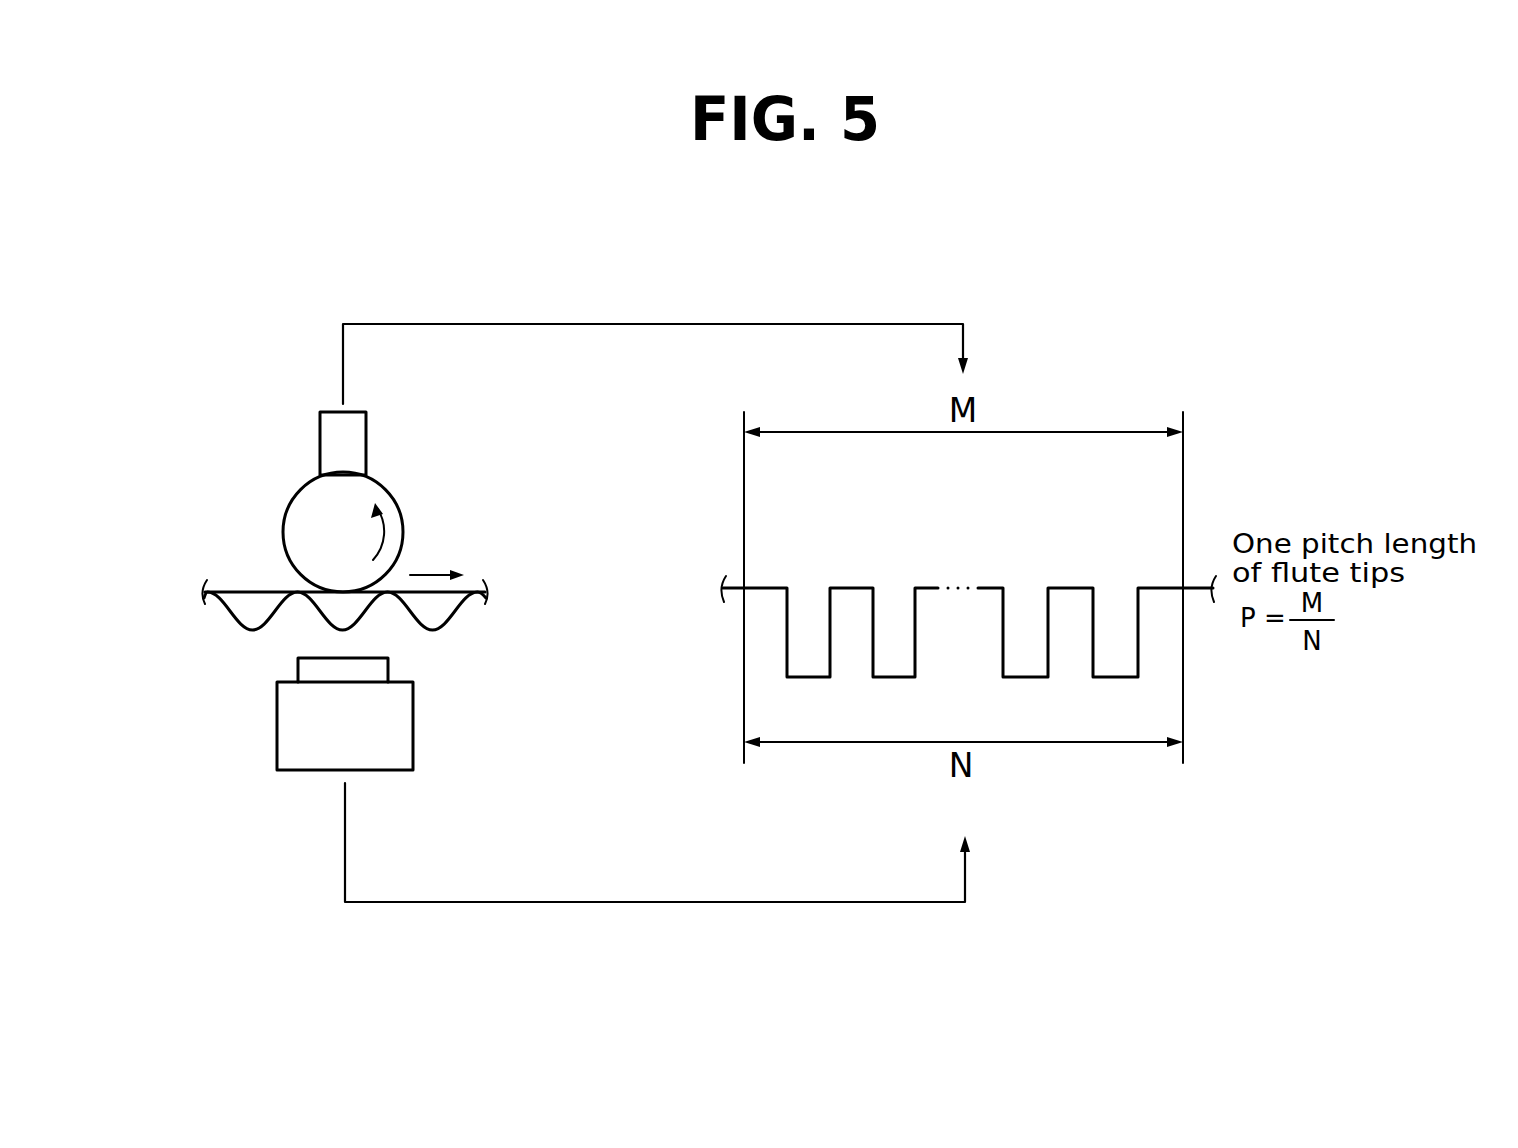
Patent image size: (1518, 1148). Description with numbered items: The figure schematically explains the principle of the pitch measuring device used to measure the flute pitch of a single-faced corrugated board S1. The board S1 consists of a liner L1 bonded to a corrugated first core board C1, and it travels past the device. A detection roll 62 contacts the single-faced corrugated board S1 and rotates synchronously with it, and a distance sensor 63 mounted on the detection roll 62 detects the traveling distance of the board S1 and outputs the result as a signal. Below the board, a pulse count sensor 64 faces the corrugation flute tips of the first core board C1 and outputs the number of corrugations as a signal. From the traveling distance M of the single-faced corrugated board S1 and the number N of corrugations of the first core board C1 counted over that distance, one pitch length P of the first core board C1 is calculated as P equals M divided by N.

The detection roll 62 is at (378, 492).
The distance sensor 63 is at (333, 418).
The pulse count sensor 64 is at (413, 715).
The single-faced corrugated board S1 is at (332, 586).
The liner L1 is at (276, 588).
The first core board C1 is at (345, 648).